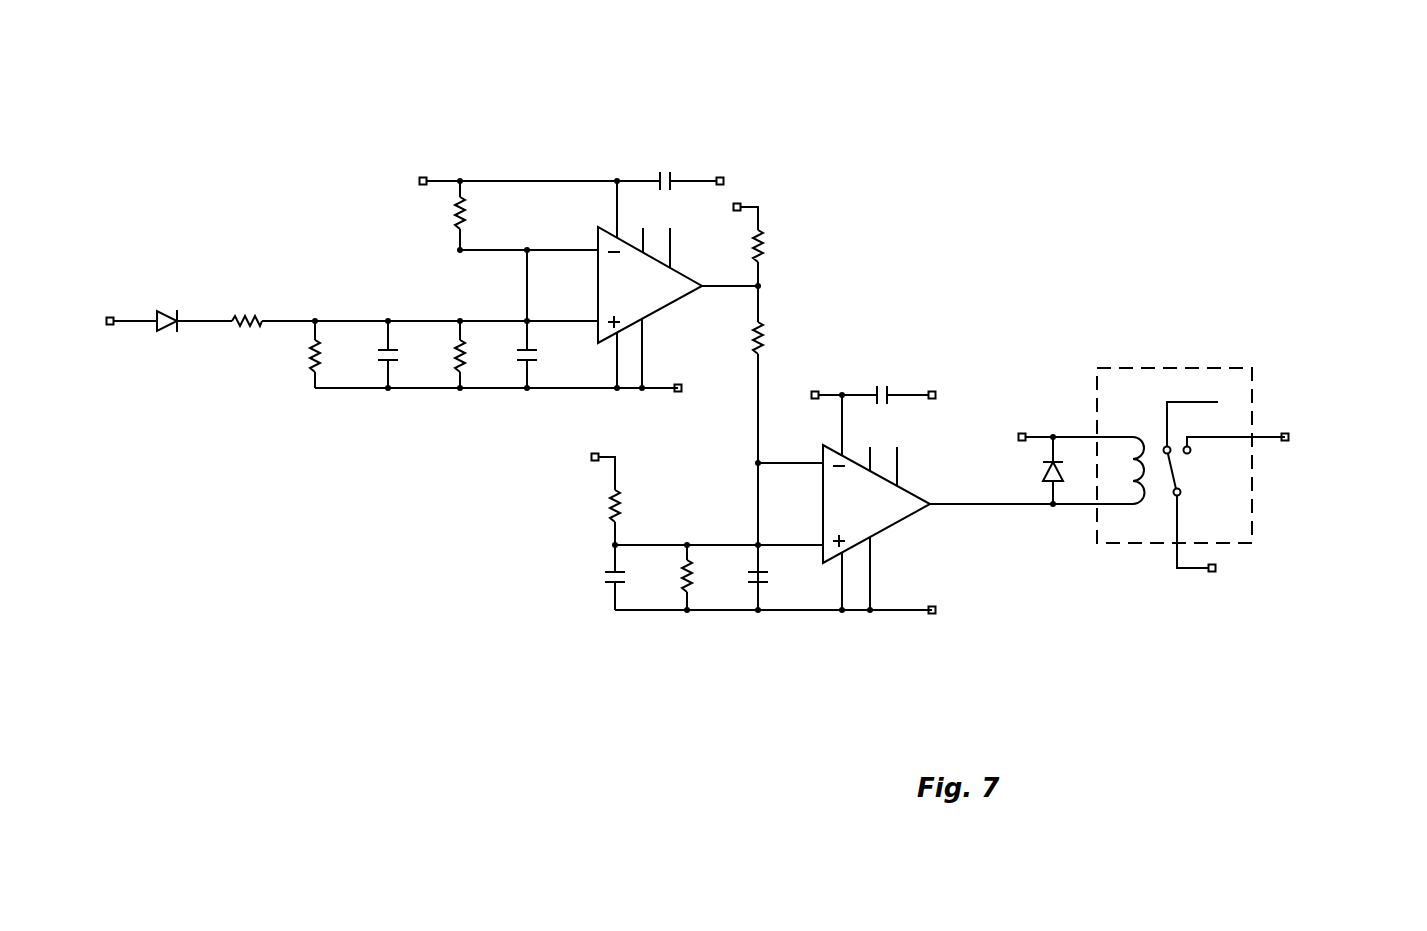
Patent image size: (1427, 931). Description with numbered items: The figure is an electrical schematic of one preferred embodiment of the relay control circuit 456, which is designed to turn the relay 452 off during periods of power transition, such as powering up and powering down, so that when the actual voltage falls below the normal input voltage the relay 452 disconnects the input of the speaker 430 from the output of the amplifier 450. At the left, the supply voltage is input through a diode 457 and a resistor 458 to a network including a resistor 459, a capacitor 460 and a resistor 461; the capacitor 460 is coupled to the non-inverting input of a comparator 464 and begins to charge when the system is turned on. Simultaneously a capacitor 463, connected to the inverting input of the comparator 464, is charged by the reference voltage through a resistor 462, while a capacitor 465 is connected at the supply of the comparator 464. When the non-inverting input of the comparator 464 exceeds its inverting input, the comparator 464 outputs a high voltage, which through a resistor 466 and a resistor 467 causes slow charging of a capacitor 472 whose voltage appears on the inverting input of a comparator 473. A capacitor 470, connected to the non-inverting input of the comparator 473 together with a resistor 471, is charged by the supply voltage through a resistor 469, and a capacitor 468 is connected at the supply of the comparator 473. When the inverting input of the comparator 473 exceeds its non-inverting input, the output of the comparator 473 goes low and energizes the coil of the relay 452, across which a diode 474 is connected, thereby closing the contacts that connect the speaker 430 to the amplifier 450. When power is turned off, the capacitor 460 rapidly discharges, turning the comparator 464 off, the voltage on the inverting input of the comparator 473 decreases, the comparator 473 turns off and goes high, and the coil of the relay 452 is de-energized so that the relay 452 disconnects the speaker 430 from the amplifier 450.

The relay control circuit 456 is at (928, 256).
The diode 457 is at (190, 303).
The resistor 458 is at (270, 300).
The resistor 459 is at (343, 354).
The capacitor 460 is at (414, 354).
The resistor 461 is at (488, 354).
The resistor 462 is at (490, 215).
The capacitor 463 is at (553, 319).
The comparator 464 is at (668, 305).
The capacitor 465 is at (703, 164).
The resistor 466 is at (755, 240).
The resistor 467 is at (788, 374).
The capacitor 468 is at (885, 379).
The resistor 469 is at (578, 490).
The capacitor 470 is at (591, 577).
The resistor 471 is at (670, 577).
The capacitor 472 is at (740, 577).
The comparator 473 is at (895, 525).
The diode 474 is at (1030, 470).
The relay 452 is at (1172, 365).
The amplifier 450 is at (1350, 455).
The speaker 430 is at (1275, 586).